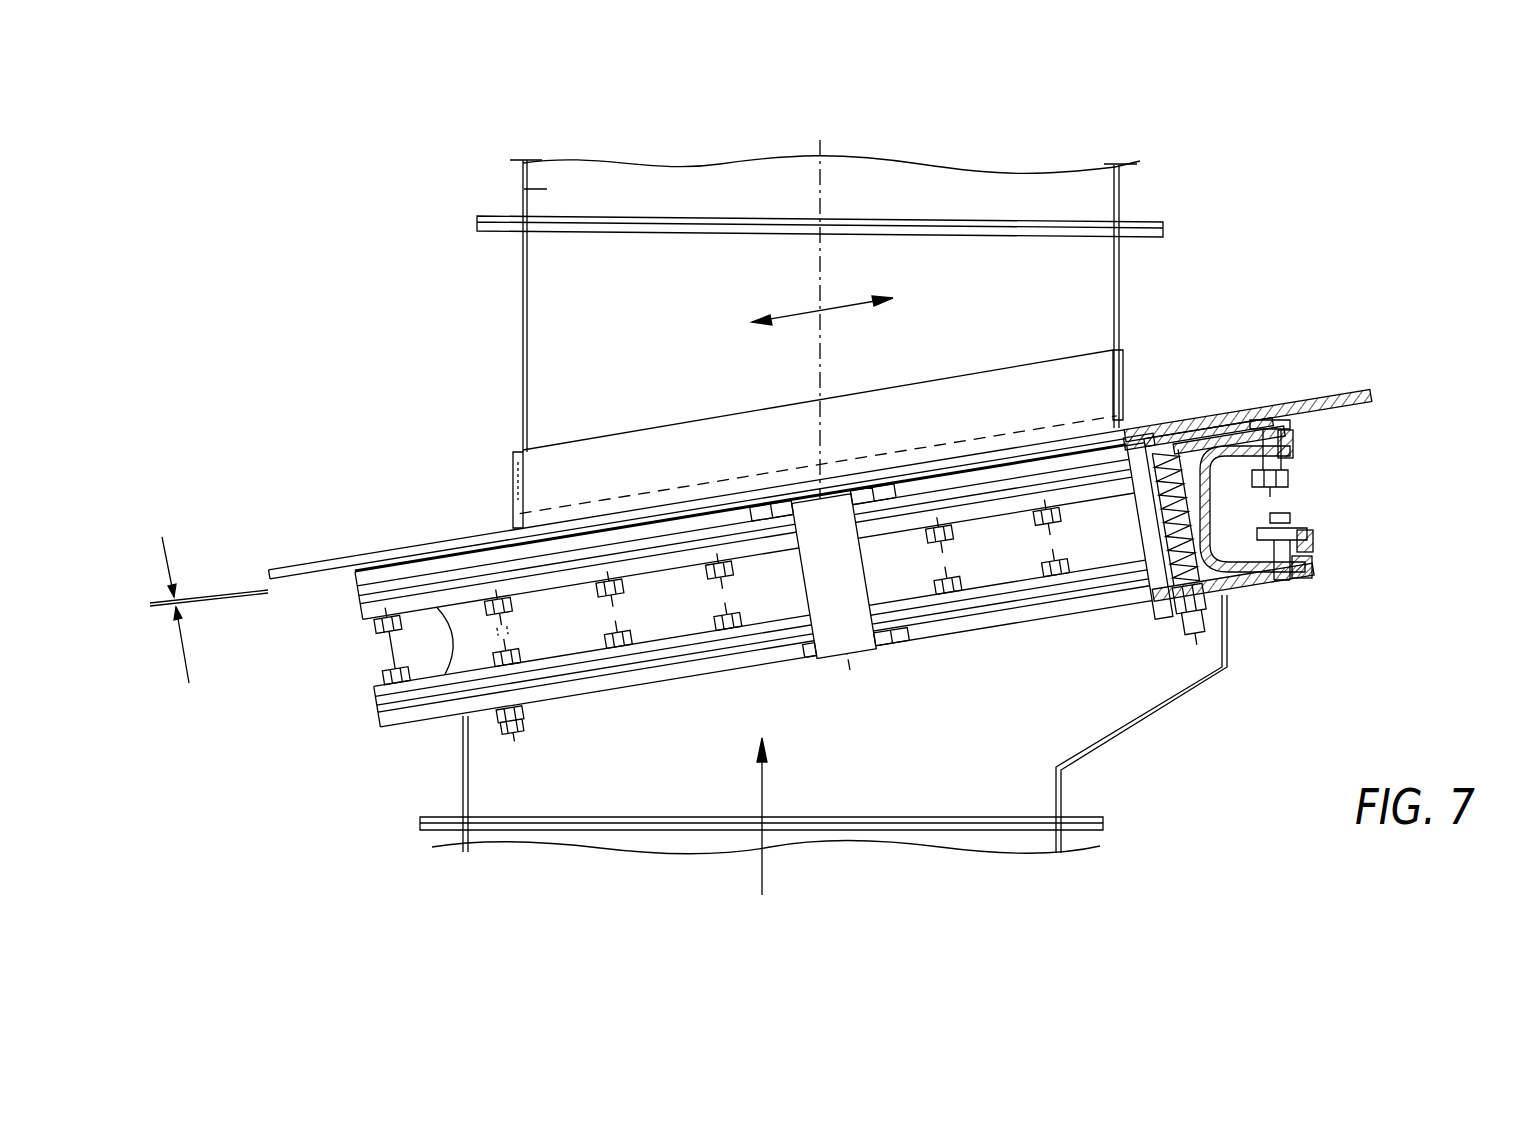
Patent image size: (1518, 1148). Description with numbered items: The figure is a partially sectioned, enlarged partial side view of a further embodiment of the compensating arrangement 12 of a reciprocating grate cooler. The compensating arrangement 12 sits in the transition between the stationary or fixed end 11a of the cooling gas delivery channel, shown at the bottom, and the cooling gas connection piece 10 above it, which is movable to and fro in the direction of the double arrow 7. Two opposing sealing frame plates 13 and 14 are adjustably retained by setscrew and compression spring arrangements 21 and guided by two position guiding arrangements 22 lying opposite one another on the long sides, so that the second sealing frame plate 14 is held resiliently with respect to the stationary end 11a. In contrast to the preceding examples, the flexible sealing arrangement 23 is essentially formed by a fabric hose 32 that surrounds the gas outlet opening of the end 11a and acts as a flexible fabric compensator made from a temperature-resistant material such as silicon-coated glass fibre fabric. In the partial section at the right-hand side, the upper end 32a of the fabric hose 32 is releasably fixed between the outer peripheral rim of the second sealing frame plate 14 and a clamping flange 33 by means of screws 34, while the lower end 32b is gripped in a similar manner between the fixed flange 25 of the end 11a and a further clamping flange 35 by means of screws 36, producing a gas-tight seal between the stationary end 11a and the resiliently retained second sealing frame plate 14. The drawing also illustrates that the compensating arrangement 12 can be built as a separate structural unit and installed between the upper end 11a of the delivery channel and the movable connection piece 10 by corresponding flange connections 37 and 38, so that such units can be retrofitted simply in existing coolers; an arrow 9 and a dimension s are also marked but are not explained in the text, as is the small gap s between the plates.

The double arrow 7 is at (800, 312).
The direction arrow 9 is at (770, 800).
The cooling gas connection piece 10 is at (560, 285).
The stationary end of the delivery channel 11a is at (1038, 842).
The compensating arrangement 12 is at (448, 495).
The first sealing frame plate 13 is at (1343, 397).
The second sealing frame plate 14 is at (1295, 427).
The setscrew and compression spring arrangement 21 is at (1188, 433).
The position guiding arrangement 22 is at (800, 585).
The flexible sealing arrangement 23 is at (425, 644).
The fixed flange 25 is at (1248, 598).
The fabric hose 32 is at (1220, 513).
The upper end of the fabric hose 32a is at (1290, 458).
The lower end of the fabric hose 32b is at (1315, 568).
The clamping flange 33 is at (1292, 465).
The screws 34 is at (1257, 417).
The further clamping flange 35 is at (1312, 540).
The screws 36 is at (1292, 582).
The flange connection 37 is at (1150, 218).
The flange connection 38 is at (428, 810).
The gap s is at (180, 648).